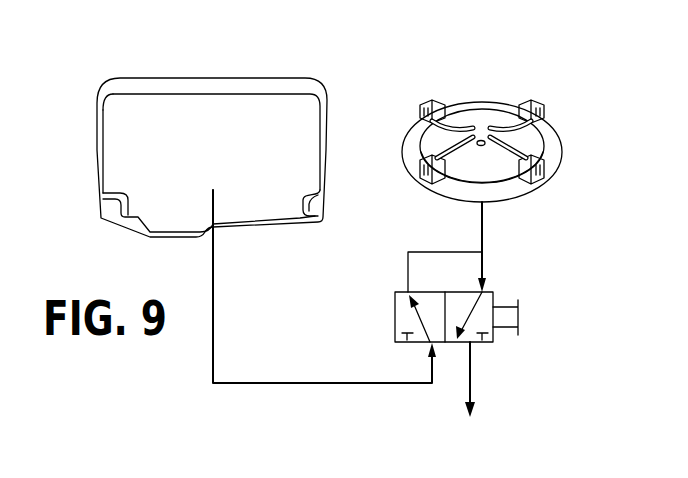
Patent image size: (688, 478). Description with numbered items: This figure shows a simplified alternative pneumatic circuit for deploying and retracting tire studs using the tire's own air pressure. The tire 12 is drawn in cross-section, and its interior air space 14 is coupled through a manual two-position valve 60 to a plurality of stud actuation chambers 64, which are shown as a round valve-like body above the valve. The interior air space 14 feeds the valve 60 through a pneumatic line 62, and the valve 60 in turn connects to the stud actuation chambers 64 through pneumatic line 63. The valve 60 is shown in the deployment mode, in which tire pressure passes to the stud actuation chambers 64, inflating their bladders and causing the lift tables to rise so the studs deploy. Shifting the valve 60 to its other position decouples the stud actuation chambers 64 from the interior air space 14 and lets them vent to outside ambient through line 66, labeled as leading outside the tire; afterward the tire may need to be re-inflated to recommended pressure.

The tire 12 is at (212, 77).
The interior air space of the tire 14 is at (200, 159).
The two-position valve 60 is at (395, 318).
The pneumatic line 62 is at (215, 284).
The pneumatic line 63 is at (428, 252).
The stud actuation chambers 64 is at (482, 102).
The vent line 66 is at (472, 380).